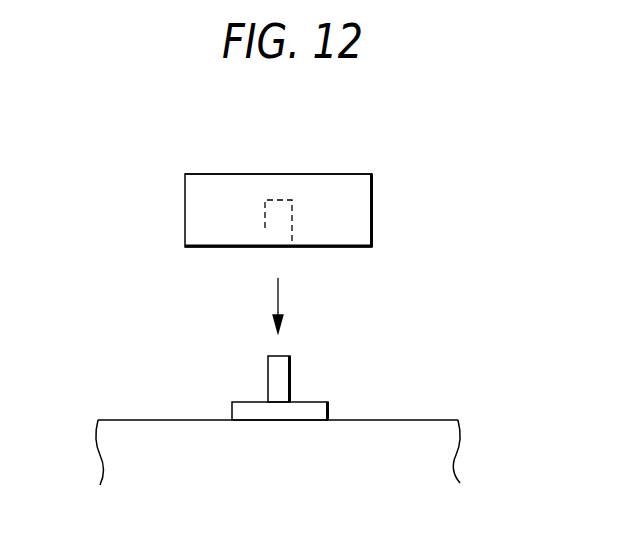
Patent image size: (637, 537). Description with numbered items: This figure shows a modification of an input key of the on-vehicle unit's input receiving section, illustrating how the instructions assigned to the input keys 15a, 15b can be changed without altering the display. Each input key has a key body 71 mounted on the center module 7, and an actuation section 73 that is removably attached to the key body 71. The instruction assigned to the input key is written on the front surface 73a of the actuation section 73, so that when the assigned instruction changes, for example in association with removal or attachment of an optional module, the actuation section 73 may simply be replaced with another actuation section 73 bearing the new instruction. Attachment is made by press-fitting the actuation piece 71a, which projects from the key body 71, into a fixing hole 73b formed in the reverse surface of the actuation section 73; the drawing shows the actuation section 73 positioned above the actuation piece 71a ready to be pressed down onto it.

The center module 7 is at (124, 404).
The input key 15a is at (342, 330).
The input key 15b is at (437, 325).
The key body 71 is at (313, 402).
The actuation piece 71a is at (268, 376).
The actuation section 73 is at (372, 212).
The front surface 73a is at (248, 174).
The fixing hole 73b is at (266, 226).